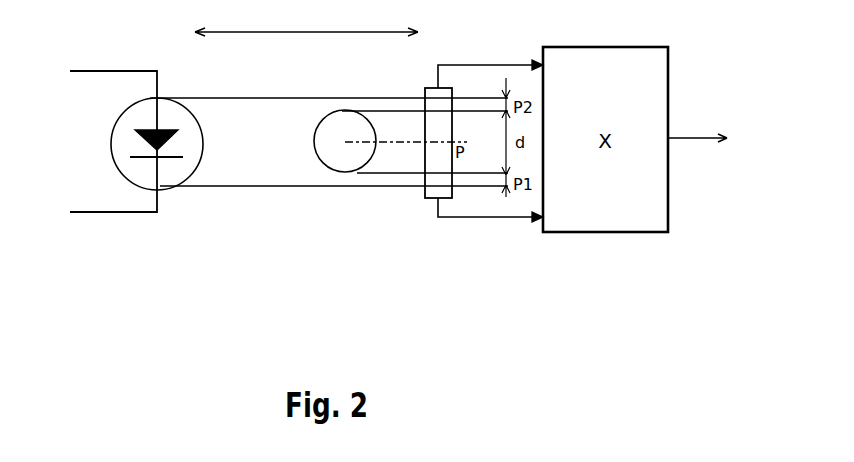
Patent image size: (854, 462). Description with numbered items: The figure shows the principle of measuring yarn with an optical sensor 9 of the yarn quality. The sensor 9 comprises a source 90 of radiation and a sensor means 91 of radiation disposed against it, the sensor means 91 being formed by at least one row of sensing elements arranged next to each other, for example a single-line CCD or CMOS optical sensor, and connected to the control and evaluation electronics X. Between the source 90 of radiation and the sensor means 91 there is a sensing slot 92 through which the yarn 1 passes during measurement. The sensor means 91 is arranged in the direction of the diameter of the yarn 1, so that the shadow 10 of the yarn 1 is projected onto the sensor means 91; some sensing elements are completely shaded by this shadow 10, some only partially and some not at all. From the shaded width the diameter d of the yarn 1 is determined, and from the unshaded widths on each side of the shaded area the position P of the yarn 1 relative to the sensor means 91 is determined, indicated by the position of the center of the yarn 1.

The yarn 1 is at (338, 160).
The sensor of the yarn quality 9 is at (235, 208).
The shadow 10 is at (395, 160).
The source of radiation 90 is at (133, 165).
The sensor means of radiation 91 is at (433, 193).
The sensing slot 92 is at (306, 21).